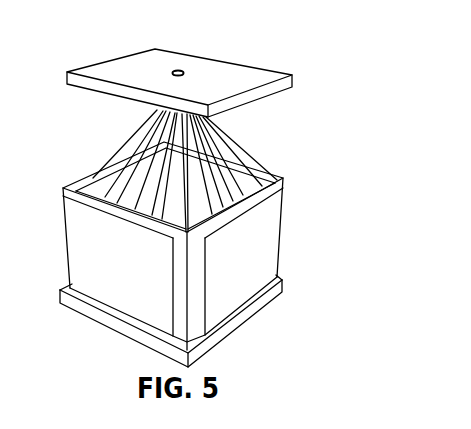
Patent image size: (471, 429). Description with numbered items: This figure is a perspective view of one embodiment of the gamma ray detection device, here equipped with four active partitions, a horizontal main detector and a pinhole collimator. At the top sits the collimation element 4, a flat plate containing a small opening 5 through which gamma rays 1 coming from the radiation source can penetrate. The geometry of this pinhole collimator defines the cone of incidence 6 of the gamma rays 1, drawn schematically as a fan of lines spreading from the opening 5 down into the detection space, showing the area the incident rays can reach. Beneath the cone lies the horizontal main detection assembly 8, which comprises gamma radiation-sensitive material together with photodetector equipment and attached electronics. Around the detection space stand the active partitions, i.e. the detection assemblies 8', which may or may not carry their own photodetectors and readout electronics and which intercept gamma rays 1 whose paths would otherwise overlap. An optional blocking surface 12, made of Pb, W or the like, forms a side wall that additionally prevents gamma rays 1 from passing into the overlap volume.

The gamma ray 1 is at (169, 167).
The collimation element 4 is at (257, 73).
The opening 5 is at (187, 68).
The cone of incidence of the gamma rays 6 is at (210, 165).
The assembly for the detection of gamma rays 8 is at (198, 316).
The assembly for the detection (active partition) of gamma rays 8' is at (143, 194).
The blocking surface 12 is at (273, 237).